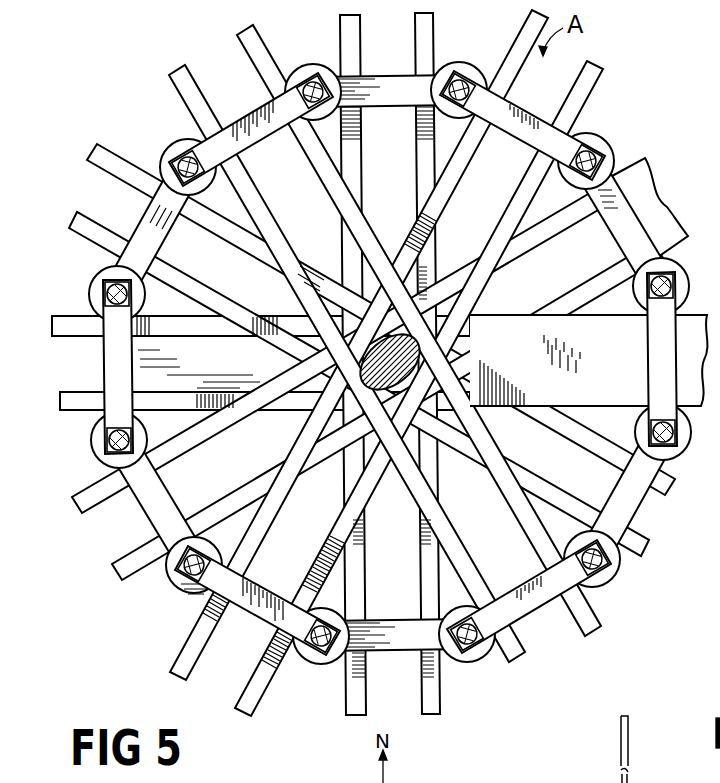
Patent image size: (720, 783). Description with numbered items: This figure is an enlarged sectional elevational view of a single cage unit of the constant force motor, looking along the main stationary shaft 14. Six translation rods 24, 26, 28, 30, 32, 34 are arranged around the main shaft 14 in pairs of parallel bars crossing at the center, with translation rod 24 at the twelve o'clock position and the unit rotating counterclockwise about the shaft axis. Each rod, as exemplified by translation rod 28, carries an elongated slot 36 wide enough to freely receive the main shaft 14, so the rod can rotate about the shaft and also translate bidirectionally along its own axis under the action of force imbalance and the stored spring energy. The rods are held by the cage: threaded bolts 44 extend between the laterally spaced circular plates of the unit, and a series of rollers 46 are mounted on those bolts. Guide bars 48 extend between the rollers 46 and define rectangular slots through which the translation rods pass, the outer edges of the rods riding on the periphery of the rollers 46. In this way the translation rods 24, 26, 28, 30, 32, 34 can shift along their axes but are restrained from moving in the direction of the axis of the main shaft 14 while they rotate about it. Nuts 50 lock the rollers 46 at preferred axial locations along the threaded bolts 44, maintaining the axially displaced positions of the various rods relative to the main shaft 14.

The main stationary shaft 14 is at (420, 360).
The translation rod 24 is at (428, 19).
The translation rod 26 is at (254, 58).
The translation rod 28 is at (113, 163).
The translation rod 30 is at (63, 325).
The translation rod 32 is at (133, 562).
The translation rod 34 is at (262, 678).
The elongated slot 36 is at (224, 272).
The threaded bolt 44 is at (596, 160).
The roller 46 is at (575, 170).
The guide bar 48 is at (652, 372).
The nut 50 is at (675, 452).